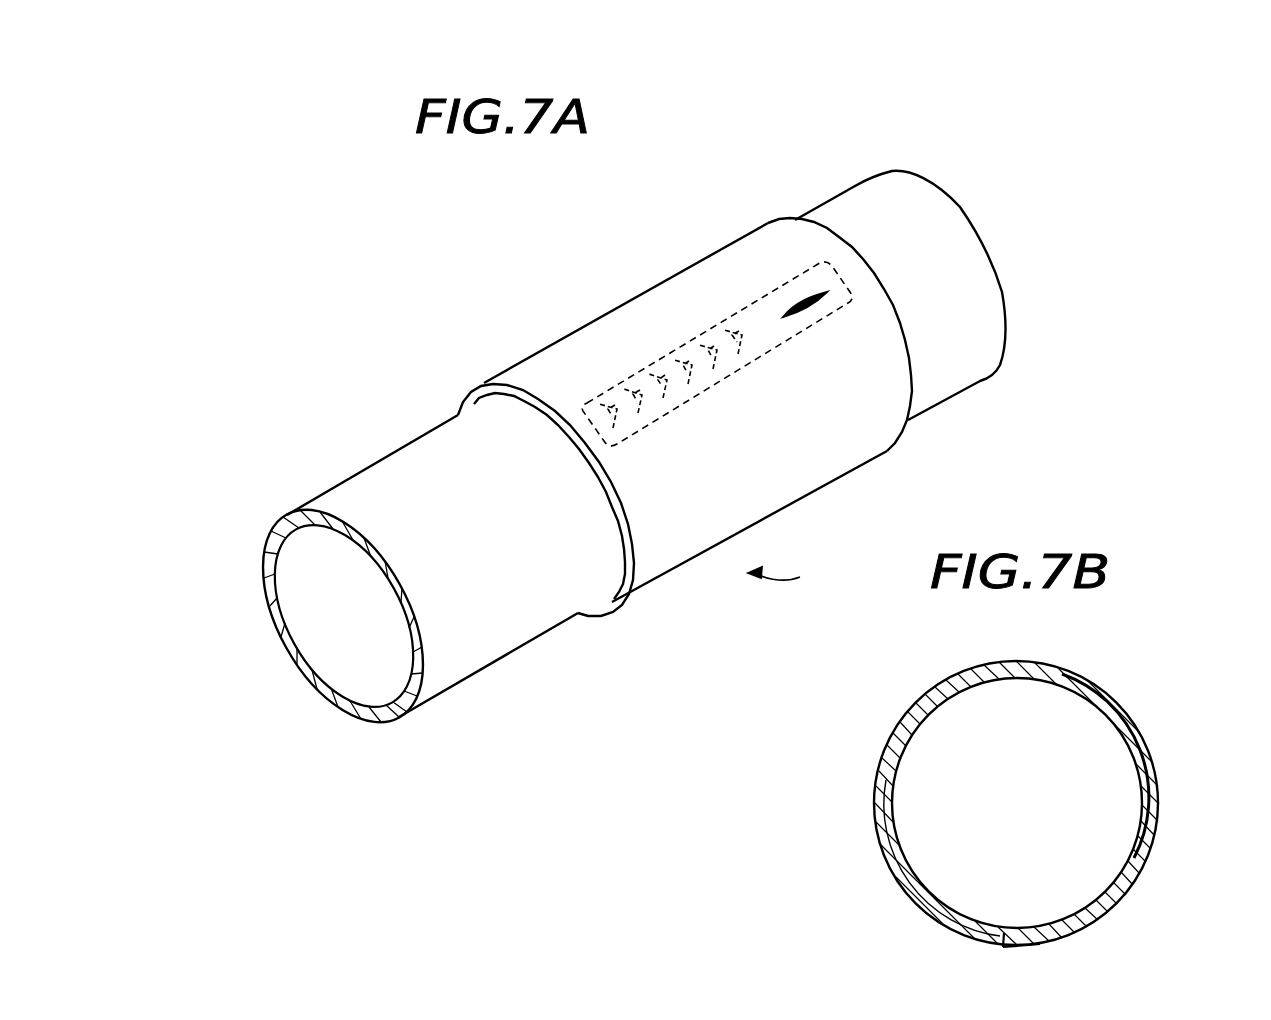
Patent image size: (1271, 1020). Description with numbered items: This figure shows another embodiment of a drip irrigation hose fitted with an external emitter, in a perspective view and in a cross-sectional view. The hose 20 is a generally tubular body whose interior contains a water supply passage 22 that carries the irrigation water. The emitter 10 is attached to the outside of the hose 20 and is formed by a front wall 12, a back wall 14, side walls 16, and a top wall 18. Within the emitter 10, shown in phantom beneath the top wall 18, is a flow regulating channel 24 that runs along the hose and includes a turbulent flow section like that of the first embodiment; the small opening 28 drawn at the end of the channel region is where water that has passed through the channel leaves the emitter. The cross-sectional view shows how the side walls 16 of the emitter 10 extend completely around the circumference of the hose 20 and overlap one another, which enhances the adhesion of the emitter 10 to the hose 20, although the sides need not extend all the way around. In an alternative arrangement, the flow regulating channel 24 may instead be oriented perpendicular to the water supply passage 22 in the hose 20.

In FIG. 7B, the emitter 10 is at (1128, 718).
In FIG. 7A, the front wall 12 is at (490, 388).
In FIG. 7A, the back wall 14 is at (857, 253).
In FIG. 7B, the side walls 16 is at (1075, 936).
In FIG. 7A, the top wall 18 is at (647, 308).
In FIG. 7A, the drip irrigation hose 20 is at (800, 574).
In FIG. 7B, the drip irrigation hose 20 is at (1145, 805).
In FIG. 7A, the water supply passage 22 is at (290, 591).
In FIG. 7B, the water supply passage 22 is at (1097, 826).
In FIG. 7A, the flow regulating channel 24 is at (610, 372).
In FIG. 7A, the slot 28 is at (803, 298).